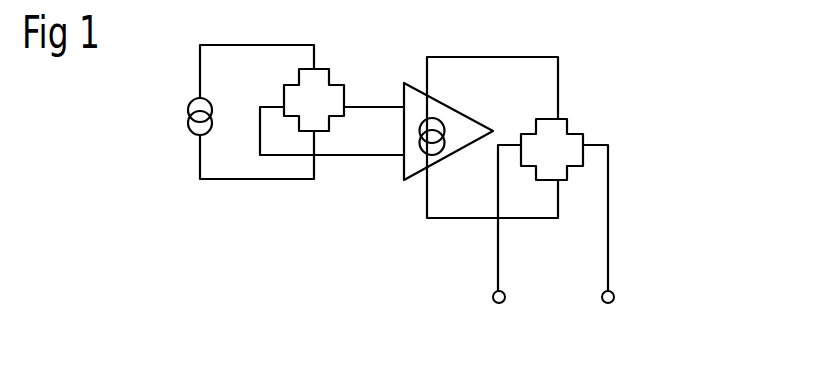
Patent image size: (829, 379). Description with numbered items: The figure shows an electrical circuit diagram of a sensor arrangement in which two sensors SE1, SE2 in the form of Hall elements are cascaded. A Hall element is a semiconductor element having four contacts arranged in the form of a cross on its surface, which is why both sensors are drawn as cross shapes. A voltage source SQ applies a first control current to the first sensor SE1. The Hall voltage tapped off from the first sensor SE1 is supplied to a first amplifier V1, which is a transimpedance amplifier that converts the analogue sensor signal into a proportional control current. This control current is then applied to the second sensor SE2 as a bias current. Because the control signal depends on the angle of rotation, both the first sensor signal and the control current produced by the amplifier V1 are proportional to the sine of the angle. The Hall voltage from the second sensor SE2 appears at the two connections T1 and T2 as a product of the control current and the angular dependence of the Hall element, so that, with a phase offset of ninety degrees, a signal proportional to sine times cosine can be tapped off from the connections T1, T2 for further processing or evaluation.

The voltage source SQ is at (185, 118).
The first sensor SE1 is at (322, 132).
The first amplifier V1 is at (458, 150).
The second sensor SE2 is at (568, 122).
The connection T1 is at (504, 304).
The connection T2 is at (611, 305).